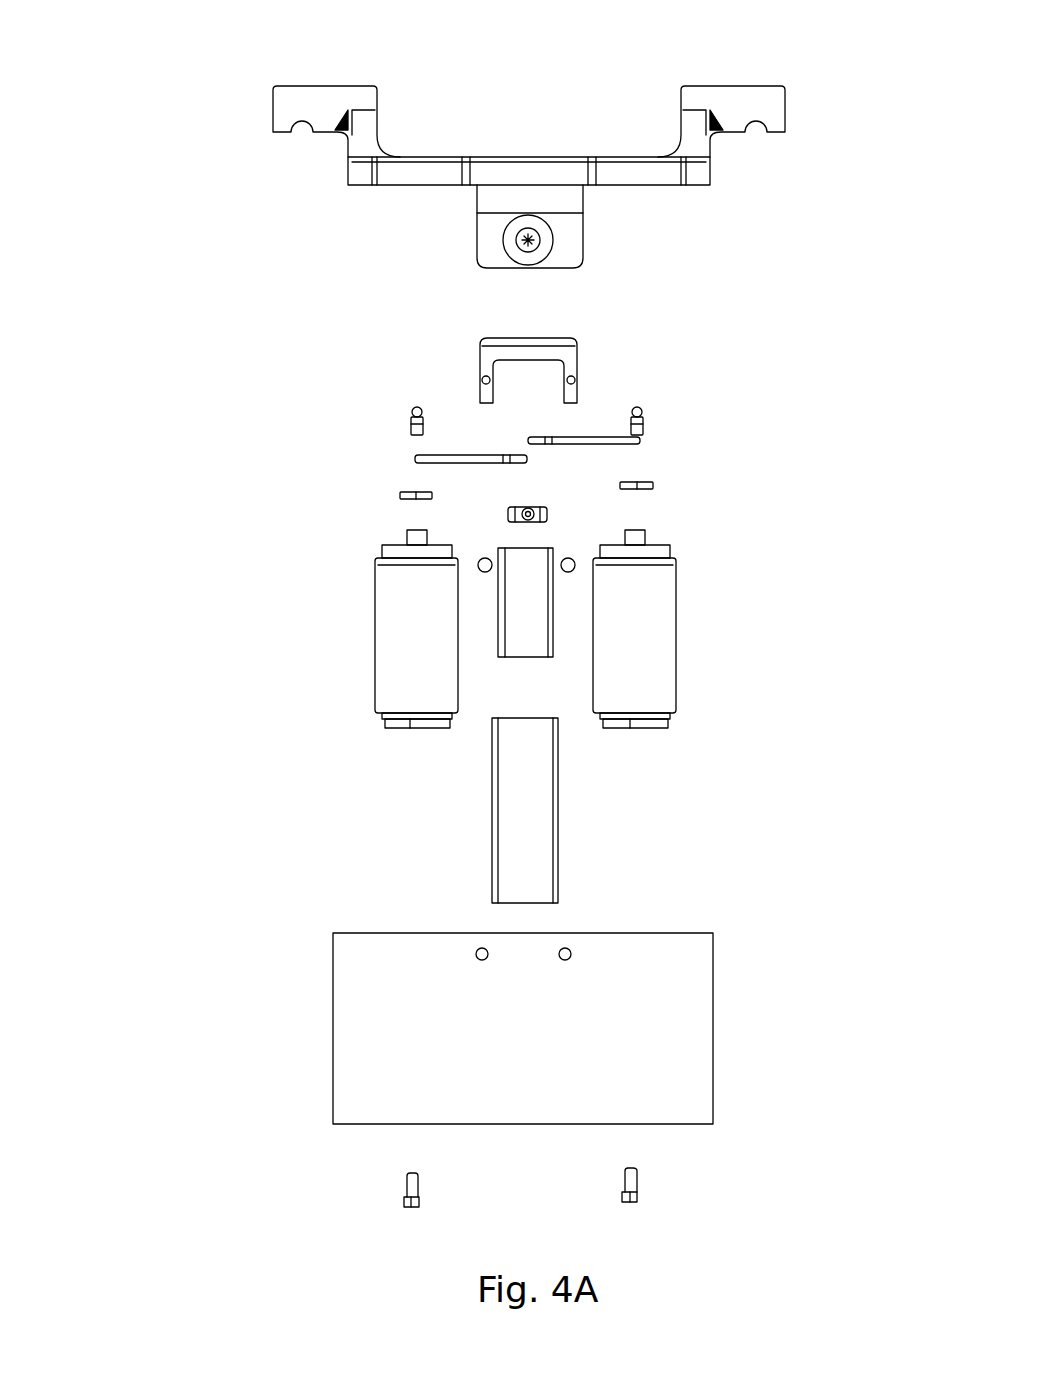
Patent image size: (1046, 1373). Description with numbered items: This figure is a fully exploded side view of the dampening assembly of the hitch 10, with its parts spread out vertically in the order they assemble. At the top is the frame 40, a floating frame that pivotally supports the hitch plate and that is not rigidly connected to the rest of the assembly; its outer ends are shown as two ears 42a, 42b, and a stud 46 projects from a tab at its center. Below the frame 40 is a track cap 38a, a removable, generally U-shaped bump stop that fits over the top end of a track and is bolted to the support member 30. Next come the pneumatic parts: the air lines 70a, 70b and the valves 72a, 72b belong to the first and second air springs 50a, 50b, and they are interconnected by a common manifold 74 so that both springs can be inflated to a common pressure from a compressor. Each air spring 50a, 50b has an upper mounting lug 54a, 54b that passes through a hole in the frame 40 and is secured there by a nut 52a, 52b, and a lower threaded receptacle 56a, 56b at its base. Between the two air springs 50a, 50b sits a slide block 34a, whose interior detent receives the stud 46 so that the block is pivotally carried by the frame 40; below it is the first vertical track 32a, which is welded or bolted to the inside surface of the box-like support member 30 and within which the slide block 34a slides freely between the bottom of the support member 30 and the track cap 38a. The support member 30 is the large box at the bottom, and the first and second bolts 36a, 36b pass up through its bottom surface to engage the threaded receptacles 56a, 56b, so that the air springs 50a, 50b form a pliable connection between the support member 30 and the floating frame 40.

The hitch 10 is at (150, 768).
The support member 30 is at (692, 1015).
The first vertical track 32a is at (545, 871).
The slide block 34a is at (505, 655).
The first bolt 36a is at (638, 1180).
The second bolt 36b is at (407, 1178).
The track cap 38a is at (570, 356).
The frame 40 is at (555, 155).
The bracket ear 42a is at (772, 95).
The bracket ear 42b is at (305, 95).
The stud 46 is at (540, 240).
The first air spring 50a is at (660, 666).
The second air spring 50b is at (400, 630).
The nut 52a is at (652, 486).
The nut 52b is at (400, 495).
The upper mounting lug 54a is at (640, 536).
The upper mounting lug 54b is at (410, 528).
The lower threaded receptacle 56a is at (630, 730).
The lower threaded receptacle 56b is at (412, 730).
The air line 70a is at (590, 451).
The air line 70b is at (415, 458).
The valve 72a is at (642, 413).
The valve 72b is at (412, 412).
The common manifold 74 is at (538, 509).